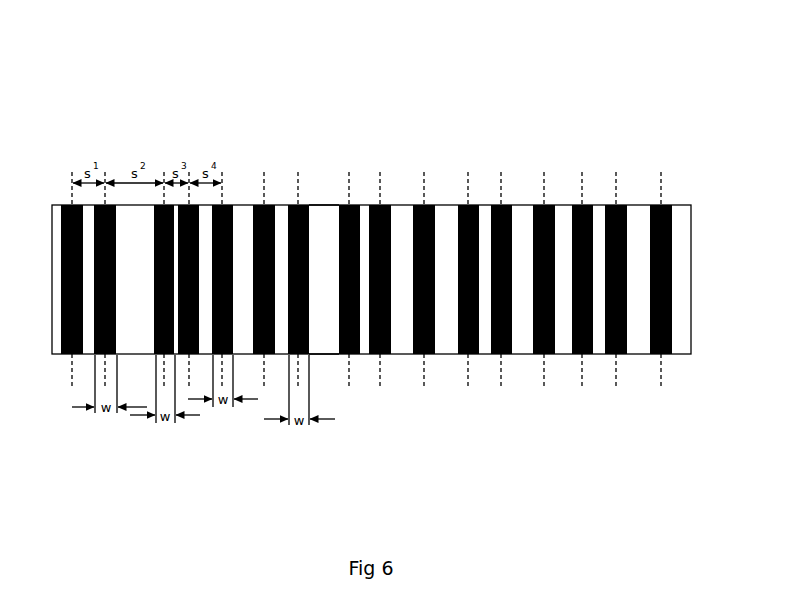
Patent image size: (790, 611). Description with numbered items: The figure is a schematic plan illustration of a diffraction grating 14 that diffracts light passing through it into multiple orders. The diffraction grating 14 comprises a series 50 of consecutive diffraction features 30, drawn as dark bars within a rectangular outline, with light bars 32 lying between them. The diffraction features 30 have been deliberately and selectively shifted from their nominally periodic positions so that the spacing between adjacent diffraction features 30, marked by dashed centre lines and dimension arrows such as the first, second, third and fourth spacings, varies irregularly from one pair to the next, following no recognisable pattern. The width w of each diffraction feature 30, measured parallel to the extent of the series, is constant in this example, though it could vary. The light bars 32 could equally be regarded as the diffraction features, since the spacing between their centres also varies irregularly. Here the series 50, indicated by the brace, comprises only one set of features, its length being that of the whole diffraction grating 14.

The diffraction grating 14 is at (610, 150).
The diffraction features 30 is at (305, 203).
The light bars 32 is at (333, 212).
The series of consecutive diffraction features 50 is at (692, 445).